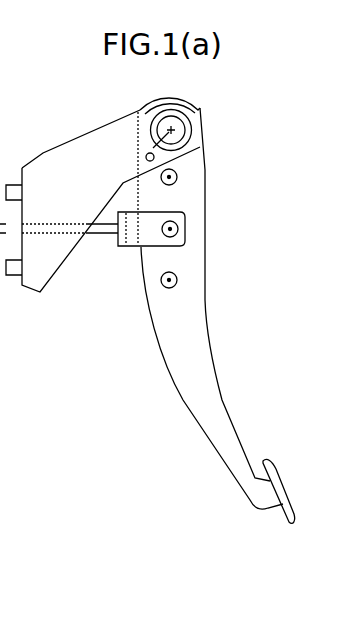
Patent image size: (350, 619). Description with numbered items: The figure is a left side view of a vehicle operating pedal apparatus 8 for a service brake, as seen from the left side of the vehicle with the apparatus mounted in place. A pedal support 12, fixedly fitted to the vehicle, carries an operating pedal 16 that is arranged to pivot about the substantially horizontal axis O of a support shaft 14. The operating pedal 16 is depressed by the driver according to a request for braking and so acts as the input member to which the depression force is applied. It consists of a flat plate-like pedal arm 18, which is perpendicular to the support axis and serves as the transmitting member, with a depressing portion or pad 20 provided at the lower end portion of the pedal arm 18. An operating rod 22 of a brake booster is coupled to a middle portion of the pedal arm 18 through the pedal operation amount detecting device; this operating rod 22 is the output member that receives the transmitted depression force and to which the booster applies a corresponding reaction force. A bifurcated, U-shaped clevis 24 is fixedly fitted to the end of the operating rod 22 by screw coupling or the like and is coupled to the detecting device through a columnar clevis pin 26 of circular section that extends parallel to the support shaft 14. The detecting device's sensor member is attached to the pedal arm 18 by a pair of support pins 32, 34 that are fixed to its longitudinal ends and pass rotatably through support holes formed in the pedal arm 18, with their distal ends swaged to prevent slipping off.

The vehicle operating pedal apparatus 8 is at (262, 129).
The pedal support 12 is at (67, 158).
The support shaft 14 is at (167, 118).
The operating pedal 16 is at (149, 425).
The pedal arm 18 is at (200, 377).
The depressing portion (pad) 20 is at (283, 498).
The operating rod 22 is at (97, 232).
The clevis 24 is at (151, 238).
The clevis pin 26 is at (178, 229).
The support pin 32 is at (177, 177).
The support pin 34 is at (177, 280).